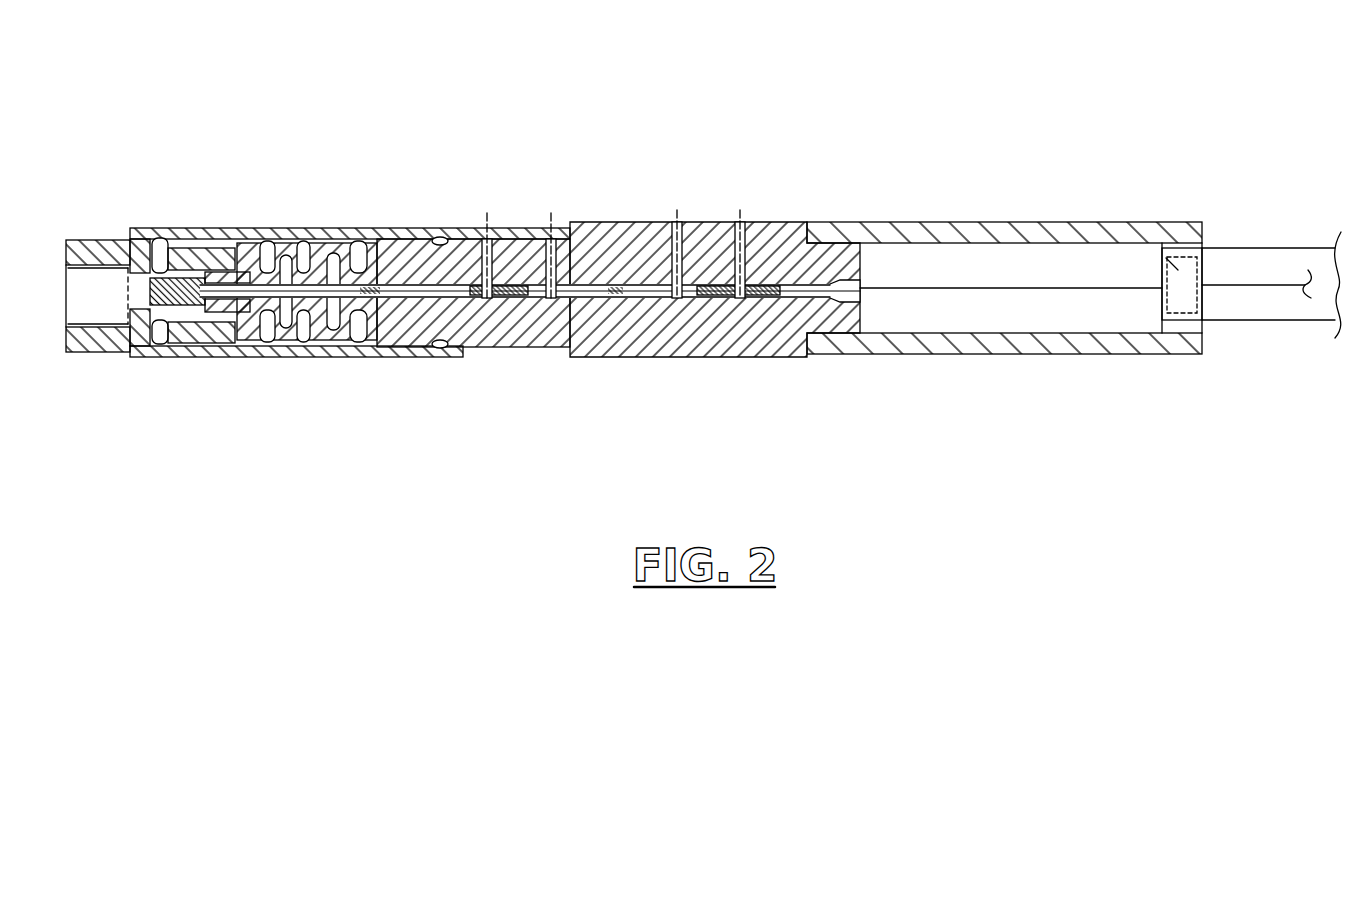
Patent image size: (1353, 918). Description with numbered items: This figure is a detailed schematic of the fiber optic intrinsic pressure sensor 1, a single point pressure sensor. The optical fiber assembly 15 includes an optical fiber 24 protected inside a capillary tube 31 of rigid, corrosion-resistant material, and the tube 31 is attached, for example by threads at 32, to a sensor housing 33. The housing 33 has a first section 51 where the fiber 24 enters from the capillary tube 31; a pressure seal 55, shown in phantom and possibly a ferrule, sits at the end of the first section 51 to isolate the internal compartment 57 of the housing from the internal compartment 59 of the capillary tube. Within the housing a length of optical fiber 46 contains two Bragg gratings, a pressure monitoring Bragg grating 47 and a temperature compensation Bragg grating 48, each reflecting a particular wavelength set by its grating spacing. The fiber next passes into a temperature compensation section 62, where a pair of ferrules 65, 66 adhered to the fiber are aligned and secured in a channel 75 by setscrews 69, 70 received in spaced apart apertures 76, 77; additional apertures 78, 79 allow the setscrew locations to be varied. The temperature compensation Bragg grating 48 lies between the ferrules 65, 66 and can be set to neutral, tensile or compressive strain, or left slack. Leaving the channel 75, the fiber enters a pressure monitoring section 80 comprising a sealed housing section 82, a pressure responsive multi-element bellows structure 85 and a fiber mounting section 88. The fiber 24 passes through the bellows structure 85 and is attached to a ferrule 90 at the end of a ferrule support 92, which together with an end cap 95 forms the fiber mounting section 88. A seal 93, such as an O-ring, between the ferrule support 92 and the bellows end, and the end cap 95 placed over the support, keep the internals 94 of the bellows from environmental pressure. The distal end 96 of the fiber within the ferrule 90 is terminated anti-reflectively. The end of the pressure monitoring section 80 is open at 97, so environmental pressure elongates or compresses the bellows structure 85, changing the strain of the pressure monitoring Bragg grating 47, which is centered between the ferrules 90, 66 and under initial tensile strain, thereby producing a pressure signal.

The pressure sensor 1 is at (752, 70).
The optical fiber assembly 15 is at (1270, 210).
The optical fiber 24 is at (1252, 286).
The capillary tube 31 is at (1268, 248).
The threads 32 is at (1210, 232).
The sensor housing 33 is at (962, 208).
The length of optical fiber 46 is at (912, 288).
The pressure monitoring Bragg grating 47 is at (400, 300).
The temperature compensation Bragg grating 48 is at (633, 297).
The first section 51 is at (1016, 355).
The pressure seal 55 is at (1143, 243).
The internal compartment 57 is at (1110, 318).
The internal compartment 59 is at (1314, 320).
The temperature compensation section 62 is at (692, 357).
The ferrule 65 is at (768, 300).
The ferrule 66 is at (517, 297).
The setscrew 69 is at (766, 238).
The setscrew 70 is at (468, 238).
The channel 75 is at (590, 297).
The aperture 76 is at (758, 240).
The aperture 77 is at (501, 240).
The additional aperture 78 is at (565, 240).
The additional aperture 79 is at (696, 238).
The pressure monitoring section 80 is at (244, 182).
The sealed housing section 82 is at (258, 230).
The multi-element bellows structure 85 is at (367, 328).
The fiber mounting section 88 is at (162, 335).
The ferrule 90 is at (285, 332).
The ferrule support 92 is at (113, 352).
The seal 93 is at (205, 275).
The internals of the bellows structure 94 is at (341, 252).
The end cap 95 is at (205, 312).
The distal end 96 is at (228, 270).
The open end 97 is at (83, 276).